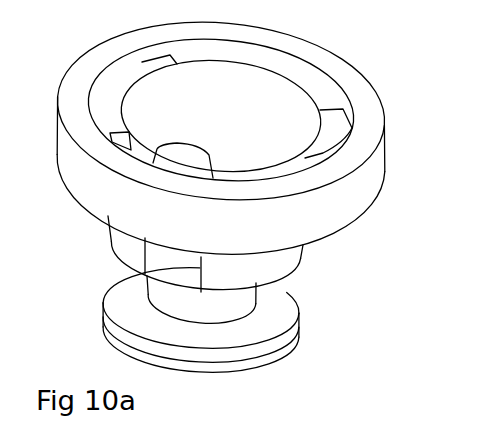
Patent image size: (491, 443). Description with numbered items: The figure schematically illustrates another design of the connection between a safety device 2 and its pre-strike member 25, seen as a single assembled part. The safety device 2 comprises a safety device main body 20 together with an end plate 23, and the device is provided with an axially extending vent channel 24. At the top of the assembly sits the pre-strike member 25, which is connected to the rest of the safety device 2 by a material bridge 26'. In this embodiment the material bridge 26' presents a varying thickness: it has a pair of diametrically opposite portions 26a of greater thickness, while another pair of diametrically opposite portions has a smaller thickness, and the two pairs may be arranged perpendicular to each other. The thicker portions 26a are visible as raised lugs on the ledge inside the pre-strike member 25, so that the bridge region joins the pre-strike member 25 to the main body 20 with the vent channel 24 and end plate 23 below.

The pre-strike member 25 is at (295, 205).
The material bridge 26' is at (228, 96).
The portions having greater thickness 26a is at (113, 90).
The safety device main body 20 is at (123, 242).
The vent channel 24 is at (180, 258).
The end plate 23 is at (123, 327).
The safety device 2 is at (352, 328).